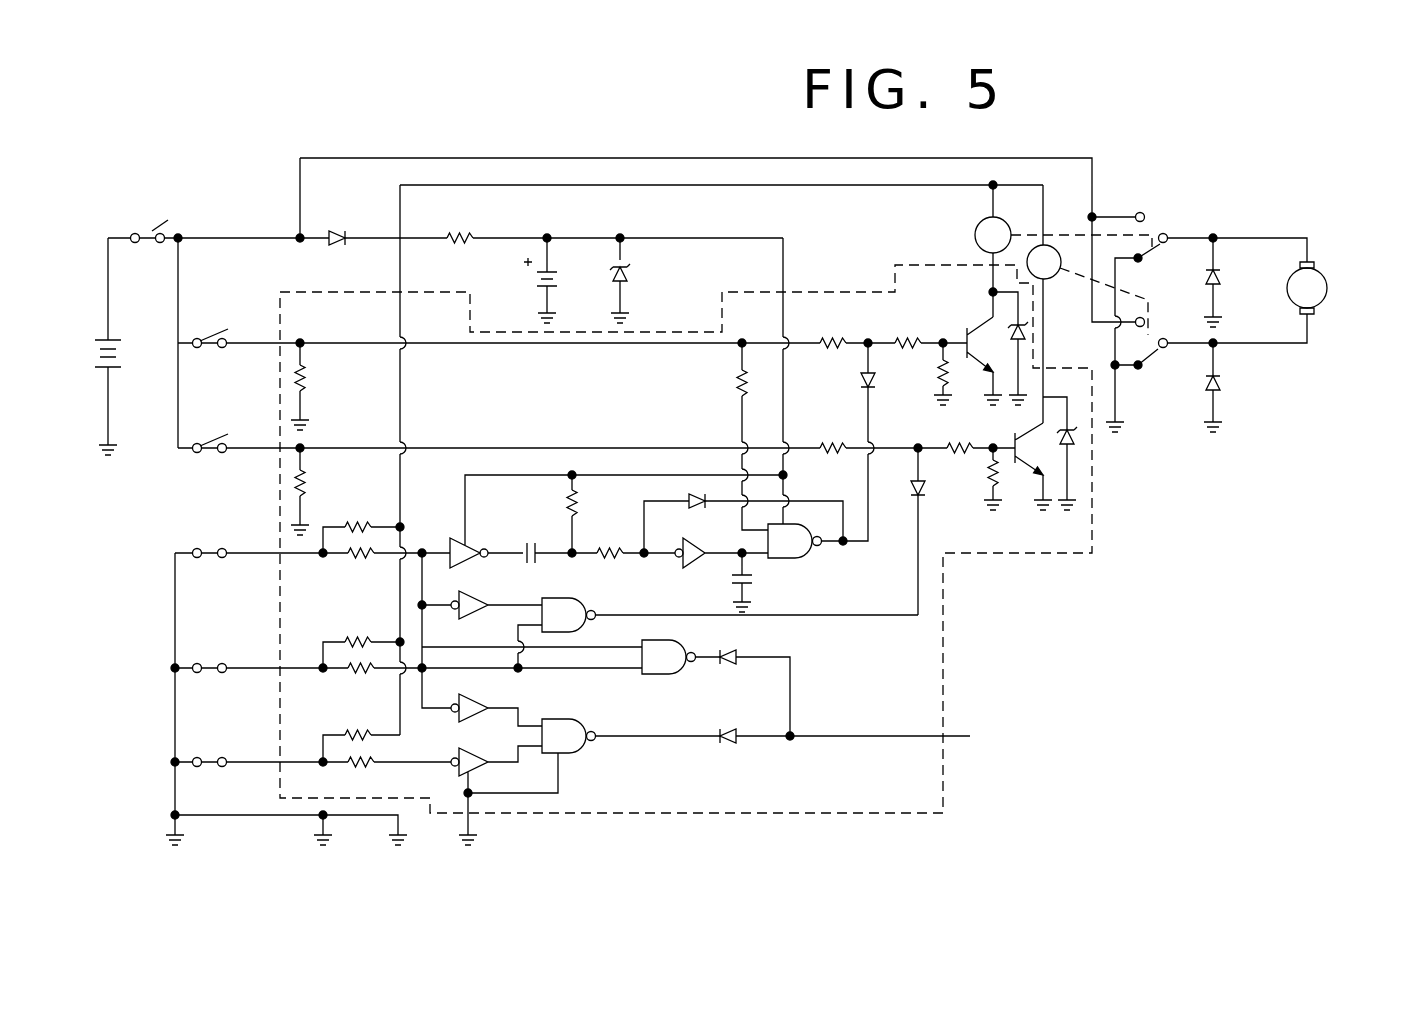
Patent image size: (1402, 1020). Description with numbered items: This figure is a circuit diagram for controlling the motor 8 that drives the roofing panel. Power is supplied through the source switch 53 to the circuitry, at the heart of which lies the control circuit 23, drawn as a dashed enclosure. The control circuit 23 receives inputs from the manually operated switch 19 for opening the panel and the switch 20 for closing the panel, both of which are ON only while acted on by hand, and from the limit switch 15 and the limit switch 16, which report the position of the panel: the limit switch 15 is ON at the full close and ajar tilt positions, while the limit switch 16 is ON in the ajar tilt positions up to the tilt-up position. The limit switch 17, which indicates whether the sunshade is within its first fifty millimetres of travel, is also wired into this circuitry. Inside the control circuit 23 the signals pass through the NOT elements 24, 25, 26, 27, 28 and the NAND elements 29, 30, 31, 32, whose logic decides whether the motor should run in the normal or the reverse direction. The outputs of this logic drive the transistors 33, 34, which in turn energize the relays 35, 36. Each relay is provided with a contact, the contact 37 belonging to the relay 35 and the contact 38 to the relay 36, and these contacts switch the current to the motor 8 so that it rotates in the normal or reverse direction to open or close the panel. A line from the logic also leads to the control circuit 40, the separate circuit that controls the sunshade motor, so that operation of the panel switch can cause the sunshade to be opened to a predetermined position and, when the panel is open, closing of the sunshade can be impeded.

The motor 8 is at (1328, 292).
The limit switch 15 is at (225, 538).
The limit switch 16 is at (225, 655).
The limit switch 17 is at (227, 750).
The switch 19 is at (213, 333).
The switch 20 is at (213, 437).
The control circuit 23 is at (672, 813).
The NOT element 24 is at (465, 550).
The NOT element 25 is at (480, 600).
The NOT element 26 is at (482, 712).
The NOT element 27 is at (455, 756).
The NOT element 28 is at (697, 569).
The NAND element 29 is at (796, 554).
The NAND element 30 is at (578, 611).
The NAND element 31 is at (688, 666).
The NAND element 32 is at (580, 727).
The transistor 33 is at (985, 325).
The transistor 34 is at (1030, 474).
The relay 35 is at (975, 237).
The relay 36 is at (1055, 278).
The contact 37 is at (1152, 242).
The contact 38 is at (1152, 352).
The control circuit 40 is at (1079, 737).
The source switch 53 is at (152, 231).